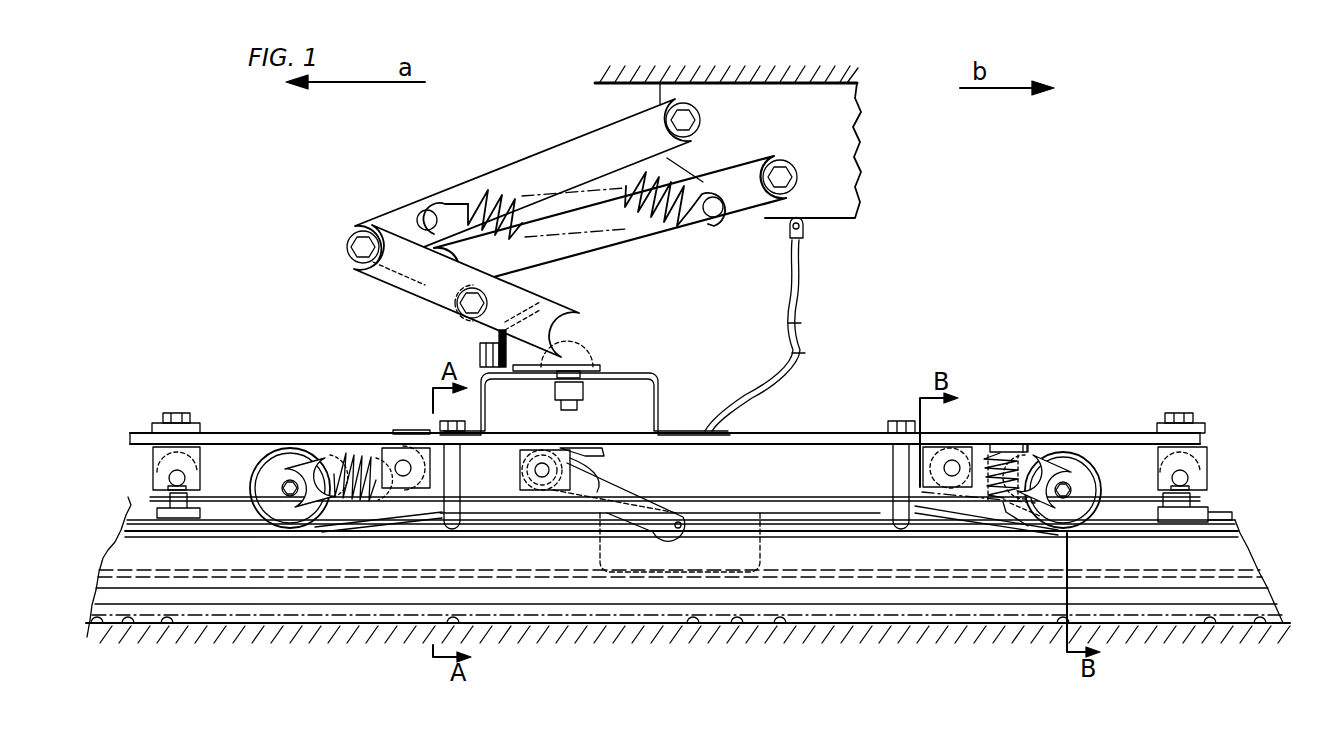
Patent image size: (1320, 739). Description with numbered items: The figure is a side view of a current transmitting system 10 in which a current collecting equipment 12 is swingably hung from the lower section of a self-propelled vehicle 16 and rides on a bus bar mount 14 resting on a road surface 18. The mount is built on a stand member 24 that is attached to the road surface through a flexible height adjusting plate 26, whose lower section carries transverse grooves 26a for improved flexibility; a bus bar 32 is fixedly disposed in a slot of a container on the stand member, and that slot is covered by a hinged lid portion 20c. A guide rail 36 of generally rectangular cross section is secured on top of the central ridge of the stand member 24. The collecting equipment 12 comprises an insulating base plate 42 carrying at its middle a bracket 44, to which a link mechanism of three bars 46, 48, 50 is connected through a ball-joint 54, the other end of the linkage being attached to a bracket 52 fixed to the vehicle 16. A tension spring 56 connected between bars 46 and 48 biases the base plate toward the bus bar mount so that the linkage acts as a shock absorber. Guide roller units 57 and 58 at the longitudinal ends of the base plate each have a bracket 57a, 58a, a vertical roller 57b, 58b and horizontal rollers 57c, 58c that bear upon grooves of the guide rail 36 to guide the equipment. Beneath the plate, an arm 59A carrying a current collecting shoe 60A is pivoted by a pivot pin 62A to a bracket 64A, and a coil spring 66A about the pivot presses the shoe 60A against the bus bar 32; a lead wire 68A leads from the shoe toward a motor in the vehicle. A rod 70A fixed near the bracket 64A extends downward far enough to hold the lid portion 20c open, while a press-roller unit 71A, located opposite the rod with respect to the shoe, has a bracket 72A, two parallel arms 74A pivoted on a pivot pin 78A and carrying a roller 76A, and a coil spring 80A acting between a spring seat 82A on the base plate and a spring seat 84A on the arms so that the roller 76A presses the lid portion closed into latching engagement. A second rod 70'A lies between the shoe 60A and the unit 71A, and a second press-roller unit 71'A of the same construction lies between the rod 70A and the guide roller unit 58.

The current transmitting system 10 is at (867, 52).
The current collecting equipment 12 is at (804, 384).
The bus bar mount 14 is at (100, 560).
The self-propelled vehicle 16 is at (776, 76).
The road surface 18 is at (336, 627).
The lid portion 20c is at (1240, 538).
The stand member 24 is at (1172, 604).
The height adjusting plate 26 is at (1282, 625).
The grooves 26a is at (167, 627).
The bus bar 32 is at (648, 578).
The guide rail 36 is at (1112, 510).
The base plate 42 is at (852, 434).
The bracket 44 is at (650, 386).
The bar 46 is at (590, 144).
The bar 48 is at (642, 250).
The bar 50 is at (416, 290).
The bracket 52 is at (840, 148).
The ball-joint 54 is at (594, 372).
The tension spring 56 is at (522, 195).
The guide roller unit 57 is at (1206, 478).
The bracket 57a is at (1207, 440).
The vertical roller 57b is at (1207, 470).
The horizontal roller 57c is at (1210, 510).
The guide roller unit 58 is at (152, 466).
The bracket 58a is at (203, 448).
The vertical roller 58b is at (152, 452).
The horizontal roller 58c is at (160, 508).
The arm 59A is at (620, 507).
The current collecting shoe 60A is at (725, 522).
The pivot pin 62A is at (536, 477).
The bracket 64A is at (530, 467).
The coil spring 66A is at (590, 452).
The lead wire 68A is at (801, 288).
The rod 70A is at (462, 528).
The rod 70'A is at (874, 492).
The press-roller unit 71A is at (1062, 456).
The press-roller unit 71'A is at (340, 462).
The bracket 72A is at (945, 460).
The parallel arms 74A is at (1008, 444).
The roller 76A is at (1083, 474).
The pivot pin 78A is at (998, 452).
The coil spring 80A is at (1040, 520).
The spring seat 82A is at (1018, 446).
The spring seat 84A is at (1003, 508).